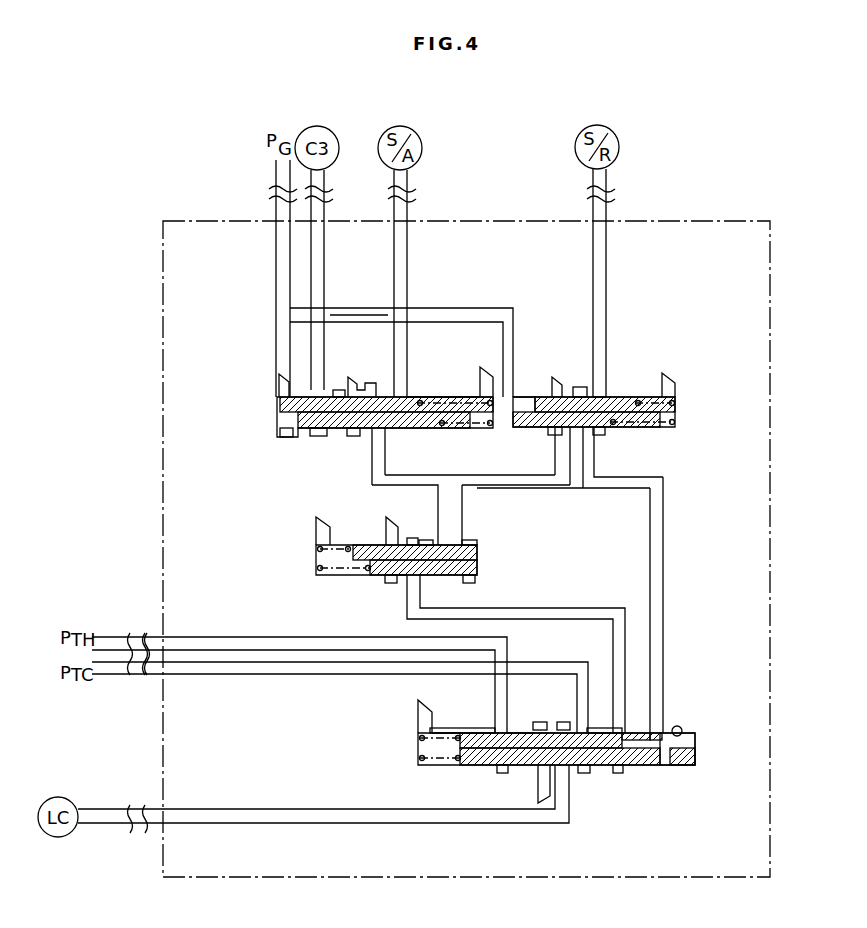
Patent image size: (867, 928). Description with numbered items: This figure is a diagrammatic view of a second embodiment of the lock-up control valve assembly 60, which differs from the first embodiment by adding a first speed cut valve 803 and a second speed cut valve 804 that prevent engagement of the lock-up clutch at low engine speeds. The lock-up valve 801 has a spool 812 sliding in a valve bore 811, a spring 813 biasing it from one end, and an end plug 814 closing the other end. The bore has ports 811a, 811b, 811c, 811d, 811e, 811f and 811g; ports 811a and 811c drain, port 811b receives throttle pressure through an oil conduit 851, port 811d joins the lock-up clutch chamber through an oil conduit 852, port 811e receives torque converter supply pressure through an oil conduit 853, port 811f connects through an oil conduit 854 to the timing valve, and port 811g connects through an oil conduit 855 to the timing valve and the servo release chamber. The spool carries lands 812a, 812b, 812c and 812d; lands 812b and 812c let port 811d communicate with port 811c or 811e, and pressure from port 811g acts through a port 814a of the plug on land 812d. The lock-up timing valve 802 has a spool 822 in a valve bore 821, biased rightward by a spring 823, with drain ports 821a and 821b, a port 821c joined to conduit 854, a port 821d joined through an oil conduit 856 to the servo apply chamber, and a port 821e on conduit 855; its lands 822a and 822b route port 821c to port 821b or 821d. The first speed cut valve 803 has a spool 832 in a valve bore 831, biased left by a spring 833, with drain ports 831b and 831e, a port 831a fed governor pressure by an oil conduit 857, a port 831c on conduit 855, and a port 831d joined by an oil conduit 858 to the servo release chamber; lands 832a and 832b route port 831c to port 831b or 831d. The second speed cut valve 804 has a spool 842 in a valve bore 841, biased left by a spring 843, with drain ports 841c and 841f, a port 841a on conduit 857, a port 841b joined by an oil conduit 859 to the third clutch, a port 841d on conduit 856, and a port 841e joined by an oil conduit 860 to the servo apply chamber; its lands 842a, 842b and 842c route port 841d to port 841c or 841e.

The control valve assembly 60 is at (163, 322).
The lock-up valve 801 is at (583, 818).
The lock-up timing valve 802 is at (297, 555).
The first speed cut valve 803 is at (691, 354).
The second speed cut valve 804 is at (262, 405).
The valve bore 811 is at (430, 732).
The port 811a is at (420, 714).
The port 811b is at (492, 728).
The port 811c is at (520, 730).
The port 811d is at (562, 722).
The port 811e is at (600, 728).
The port 811f is at (630, 733).
The port 811g is at (658, 733).
The spool 812 is at (532, 732).
The land 812a is at (488, 770).
The land 812b is at (533, 770).
The land 812c is at (572, 772).
The land 812d is at (620, 768).
The spring 813 is at (425, 762).
The end plug 814 is at (688, 767).
The port 814a is at (682, 728).
The valve bore 821 is at (322, 575).
The port 821a is at (318, 528).
The port 821b is at (385, 528).
The port 821c is at (410, 538).
The port 821d is at (435, 540).
The port 821e is at (478, 542).
The spool 822 is at (375, 578).
The land 822a is at (385, 578).
The land 822b is at (475, 582).
The spring 823 is at (333, 575).
The valve bore 831 is at (630, 428).
The port 831a is at (522, 395).
The port 831b is at (554, 390).
The port 831c is at (580, 387).
The port 831d is at (598, 396).
The port 831e is at (670, 392).
The spool 832 is at (647, 427).
The land 832a is at (555, 432).
The land 832b is at (588, 430).
The spring 833 is at (672, 427).
The valve bore 841 is at (420, 394).
The port 841a is at (282, 382).
The port 841b is at (288, 362).
The port 841c is at (340, 390).
The port 841d is at (368, 383).
The port 841e is at (378, 330).
The port 841f is at (484, 368).
The spool 842 is at (456, 427).
The land 842a is at (280, 431).
The land 842b is at (344, 436).
The land 842c is at (416, 432).
The spring 843 is at (440, 398).
The oil conduit 851 is at (508, 655).
The oil conduit 852 is at (482, 824).
The oil conduit 853 is at (310, 676).
The oil conduit 854 is at (578, 608).
The oil conduit 855 is at (664, 578).
The oil conduit 856 is at (440, 475).
The oil conduit 857 is at (518, 308).
The oil conduit 858 is at (607, 322).
The oil conduit 859 is at (326, 252).
The oil conduit 860 is at (408, 266).